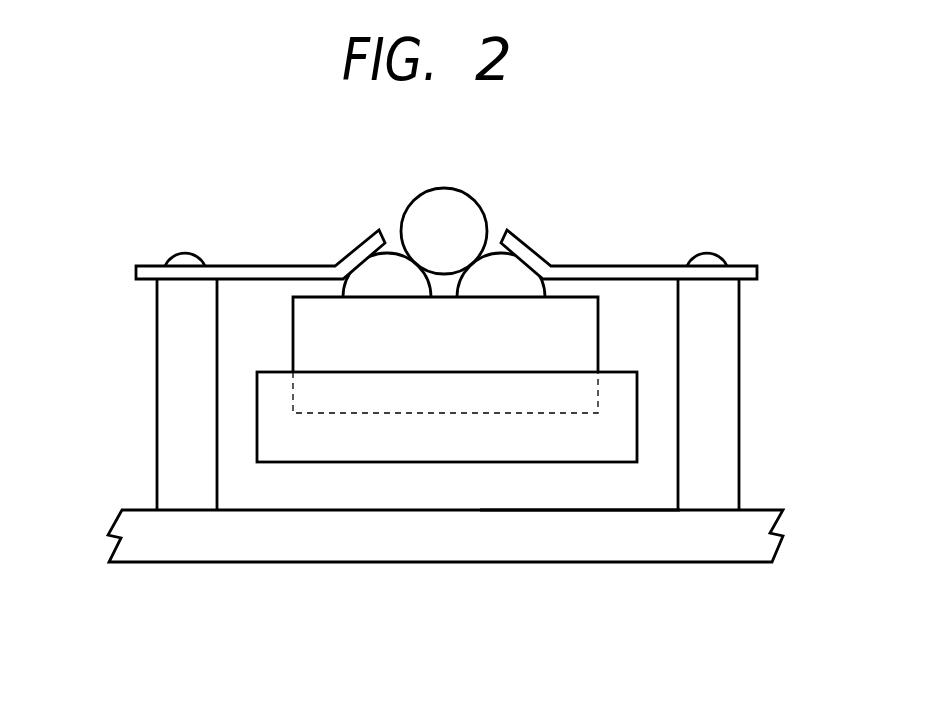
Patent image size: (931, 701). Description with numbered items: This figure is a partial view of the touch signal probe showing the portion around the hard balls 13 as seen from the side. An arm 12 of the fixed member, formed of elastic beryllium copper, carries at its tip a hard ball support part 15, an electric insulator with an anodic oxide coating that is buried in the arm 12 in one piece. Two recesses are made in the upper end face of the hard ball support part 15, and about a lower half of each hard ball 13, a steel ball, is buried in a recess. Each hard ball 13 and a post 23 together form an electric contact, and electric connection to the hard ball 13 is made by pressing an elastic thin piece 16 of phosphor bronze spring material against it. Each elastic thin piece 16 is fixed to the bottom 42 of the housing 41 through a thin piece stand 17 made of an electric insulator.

The arm 12 is at (628, 442).
The hard ball 13 is at (370, 253).
The hard ball support part 15 is at (598, 325).
The elastic thin piece 16 is at (265, 258).
The thin piece stand 17 is at (172, 395).
The post 23 is at (467, 205).
The housing 41 is at (398, 545).
The bottom 42 is at (577, 510).